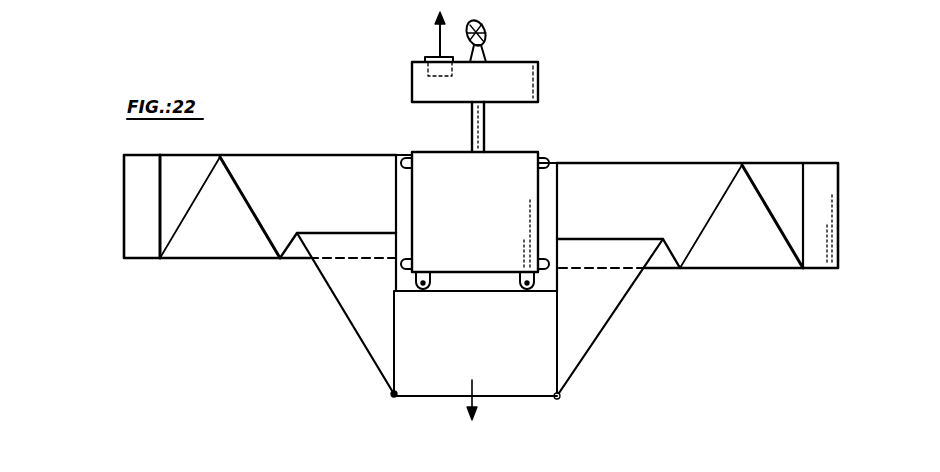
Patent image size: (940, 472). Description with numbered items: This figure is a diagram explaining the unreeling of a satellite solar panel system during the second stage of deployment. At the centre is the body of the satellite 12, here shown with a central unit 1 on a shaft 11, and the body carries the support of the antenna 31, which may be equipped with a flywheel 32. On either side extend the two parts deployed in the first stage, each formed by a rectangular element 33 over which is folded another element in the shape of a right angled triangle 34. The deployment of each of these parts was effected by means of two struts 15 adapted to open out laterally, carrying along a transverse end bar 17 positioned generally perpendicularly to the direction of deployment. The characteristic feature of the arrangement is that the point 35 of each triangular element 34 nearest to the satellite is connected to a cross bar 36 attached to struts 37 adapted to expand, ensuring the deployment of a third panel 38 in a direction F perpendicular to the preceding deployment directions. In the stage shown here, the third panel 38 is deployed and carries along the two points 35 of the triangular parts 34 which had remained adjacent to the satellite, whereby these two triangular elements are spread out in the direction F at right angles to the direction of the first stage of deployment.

The central body / engine unit 1 is at (476, 233).
The shaft 11 is at (484, 134).
The body of the satellite 12 is at (542, 76).
The struts 15 is at (306, 158).
The transverse end bar 17 is at (124, 214).
The antenna 31 is at (481, 38).
The flywheel 32 is at (430, 58).
The rectangular element 33 is at (195, 166).
The right angled triangle 34 is at (352, 288).
The point 35 is at (392, 384).
The cross bar 36 is at (428, 398).
The struts 37 is at (393, 330).
The third panel 38 is at (481, 346).